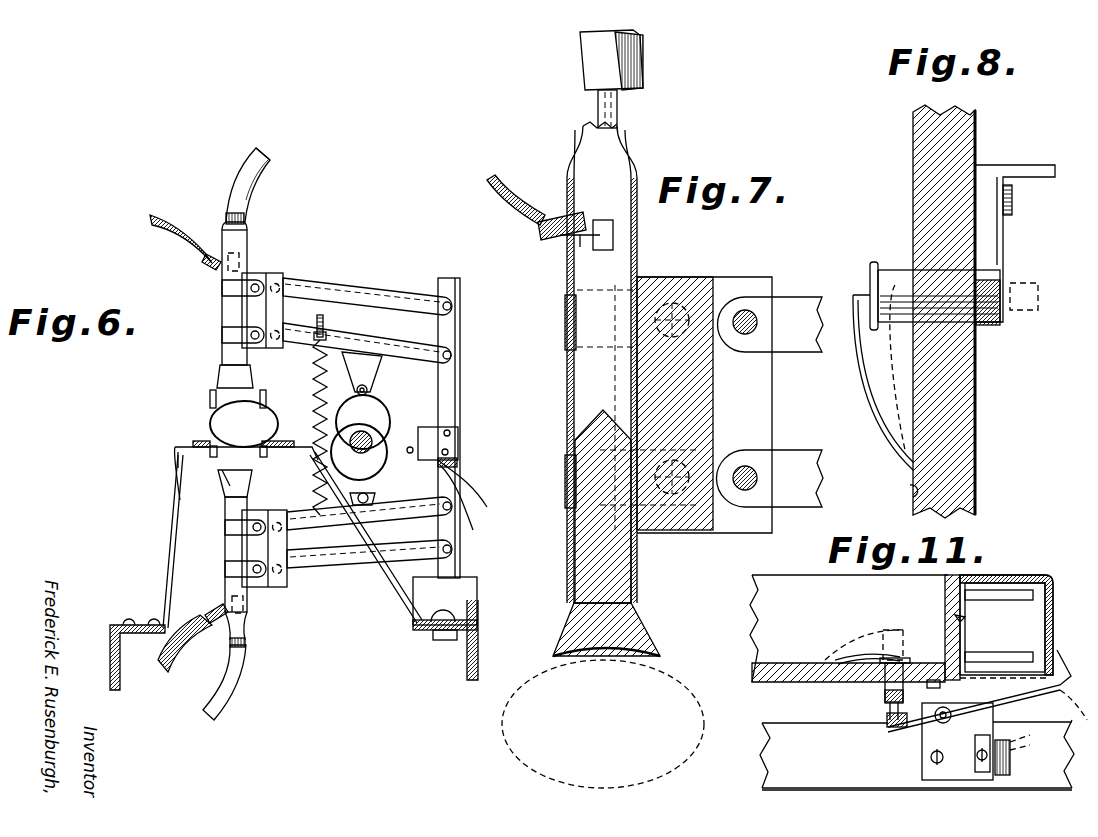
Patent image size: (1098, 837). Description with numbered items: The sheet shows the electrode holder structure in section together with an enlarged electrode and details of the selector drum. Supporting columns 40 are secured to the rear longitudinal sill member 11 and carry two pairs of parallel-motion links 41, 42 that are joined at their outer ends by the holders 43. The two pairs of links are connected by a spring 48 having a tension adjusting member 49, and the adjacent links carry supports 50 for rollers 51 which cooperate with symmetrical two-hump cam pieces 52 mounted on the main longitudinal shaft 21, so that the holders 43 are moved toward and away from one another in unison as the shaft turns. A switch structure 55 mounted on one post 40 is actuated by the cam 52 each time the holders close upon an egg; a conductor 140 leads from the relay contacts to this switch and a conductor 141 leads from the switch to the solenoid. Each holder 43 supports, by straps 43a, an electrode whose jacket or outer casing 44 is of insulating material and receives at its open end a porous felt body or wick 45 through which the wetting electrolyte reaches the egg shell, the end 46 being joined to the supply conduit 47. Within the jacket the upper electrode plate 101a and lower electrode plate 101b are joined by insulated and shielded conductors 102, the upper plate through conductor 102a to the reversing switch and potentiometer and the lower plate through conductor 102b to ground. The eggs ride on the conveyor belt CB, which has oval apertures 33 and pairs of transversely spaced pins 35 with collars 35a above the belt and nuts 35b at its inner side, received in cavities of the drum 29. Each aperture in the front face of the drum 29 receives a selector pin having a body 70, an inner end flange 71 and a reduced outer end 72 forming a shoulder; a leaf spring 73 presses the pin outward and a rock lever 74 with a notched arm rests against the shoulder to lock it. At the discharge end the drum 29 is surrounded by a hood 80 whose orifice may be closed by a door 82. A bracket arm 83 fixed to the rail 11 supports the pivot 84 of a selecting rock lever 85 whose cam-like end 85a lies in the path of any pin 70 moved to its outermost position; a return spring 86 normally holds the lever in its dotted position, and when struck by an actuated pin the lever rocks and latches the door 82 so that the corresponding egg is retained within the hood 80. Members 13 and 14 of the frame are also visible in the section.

In FIG. 6, the rear longitudinal sill member 11 is at (112, 627).
In FIG. 11, the rear longitudinal sill member 11 is at (762, 762).
In FIG. 6, the frame rail 13 is at (178, 515).
In FIG. 6, the platform 14 is at (178, 450).
In FIG. 6, the main longitudinal shaft 21 is at (372, 440).
In FIG. 8, the drum 29 is at (965, 388).
In FIG. 11, the drum 29 is at (757, 675).
In FIG. 11, the apertures 33 is at (955, 617).
In FIG. 6, the pins 35 is at (212, 392).
In FIG. 11, the pins 35 is at (1010, 608).
In FIG. 6, the collars 35a is at (244, 424).
In FIG. 6, the nuts 35b is at (238, 472).
In FIG. 6, the supporting columns 40 is at (461, 330).
In FIG. 6, the parallel-motion links 41 is at (380, 292).
In FIG. 7, the parallel-motion links 41 is at (792, 465).
In FIG. 6, the parallel-motion links 42 is at (417, 538).
In FIG. 6, the holders 43 is at (258, 273).
In FIG. 7, the holders 43 is at (685, 280).
In FIG. 6, the straps 43a is at (225, 569).
In FIG. 7, the straps 43a is at (550, 486).
In FIG. 6, the outer casing structure 44 is at (232, 305).
In FIG. 7, the outer casing structure 44 is at (614, 235).
In FIG. 6, the porous application wick 45 is at (226, 380).
In FIG. 7, the porous application wick 45 is at (643, 620).
In FIG. 6, the end 46 is at (228, 222).
In FIG. 7, the end 46 is at (598, 100).
In FIG. 6, the supply conduit 47 is at (250, 163).
In FIG. 7, the supply conduit 47 is at (580, 55).
In FIG. 6, the spring 48 is at (313, 397).
In FIG. 6, the tension adjusting member 49 is at (327, 332).
In FIG. 6, the supports 50 is at (376, 376).
In FIG. 6, the rollers 51 is at (368, 390).
In FIG. 6, the cam pieces 52 is at (378, 416).
In FIG. 6, the switch structure 55 is at (436, 436).
In FIG. 8, the pin body 70 is at (884, 268).
In FIG. 11, the pin body 70 is at (884, 694).
In FIG. 8, the inner end flange 71 is at (868, 290).
In FIG. 11, the inner end flange 71 is at (903, 655).
In FIG. 8, the reduced outer end 72 is at (992, 290).
In FIG. 8, the leaf springs 73 is at (870, 392).
In FIG. 11, the leaf springs 73 is at (850, 655).
In FIG. 8, the rock lever 74 is at (1000, 230).
In FIG. 11, the rock lever 74 is at (941, 685).
In FIG. 11, the hood 80 is at (1008, 575).
In FIG. 11, the door 82 is at (1052, 590).
In FIG. 11, the bracket arm 83 is at (945, 765).
In FIG. 11, the pivot 84 is at (975, 705).
In FIG. 11, the selecting rock lever 85 is at (987, 691).
In FIG. 11, the cam-like end 85a is at (888, 725).
In FIG. 11, the return spring 86 is at (1005, 745).
In FIG. 6, the upper electrode plate 101a is at (242, 250).
In FIG. 7, the upper electrode plate 101a is at (583, 240).
In FIG. 6, the lower electrode plate 101b is at (247, 605).
In FIG. 7, the insulated and shielded conductor 102 is at (565, 220).
In FIG. 6, the conductor 102a is at (180, 187).
In FIG. 7, the conductor 102a is at (512, 165).
In FIG. 6, the conductor 102b is at (168, 668).
In FIG. 6, the conductor 140 is at (468, 480).
In FIG. 6, the conductor 141 is at (471, 505).
In FIG. 6, the conveyor belt CB is at (205, 443).
In FIG. 11, the conveyor belt CB is at (950, 585).